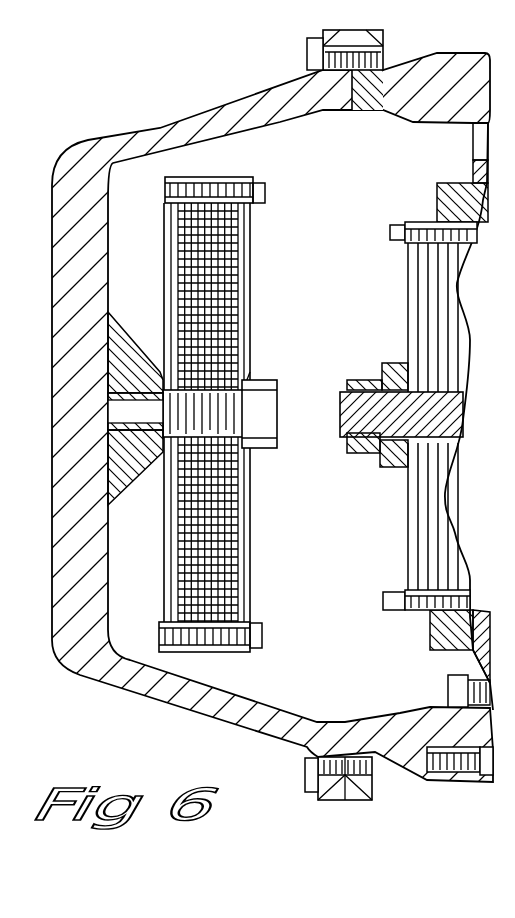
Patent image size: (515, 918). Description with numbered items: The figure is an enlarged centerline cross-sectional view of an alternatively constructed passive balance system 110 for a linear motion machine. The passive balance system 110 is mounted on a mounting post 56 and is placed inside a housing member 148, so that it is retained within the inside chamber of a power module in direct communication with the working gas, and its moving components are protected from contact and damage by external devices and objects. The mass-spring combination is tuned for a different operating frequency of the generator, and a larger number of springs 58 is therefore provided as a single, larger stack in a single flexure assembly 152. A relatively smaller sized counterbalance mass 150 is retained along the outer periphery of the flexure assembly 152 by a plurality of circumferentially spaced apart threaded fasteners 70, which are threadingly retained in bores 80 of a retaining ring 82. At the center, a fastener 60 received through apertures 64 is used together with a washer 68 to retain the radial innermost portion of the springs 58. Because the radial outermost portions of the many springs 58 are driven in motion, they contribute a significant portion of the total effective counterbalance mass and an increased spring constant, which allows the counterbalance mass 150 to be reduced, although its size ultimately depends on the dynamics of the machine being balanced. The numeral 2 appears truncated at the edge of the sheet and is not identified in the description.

The housing member 148 is at (158, 127).
The bores 80 is at (147, 190).
The passive balance system 110 is at (257, 394).
The threaded fasteners 70 is at (266, 193).
The counterbalance mass 150 is at (248, 215).
The retaining ring 82 is at (167, 212).
The springs 58 is at (237, 294).
The washer 68 is at (243, 380).
The apertures 64 is at (236, 402).
The fastener 60 is at (277, 420).
The mounting post 56 is at (135, 475).
The flexure assembly 152 is at (258, 539).
The motor 2 is at (480, 416).